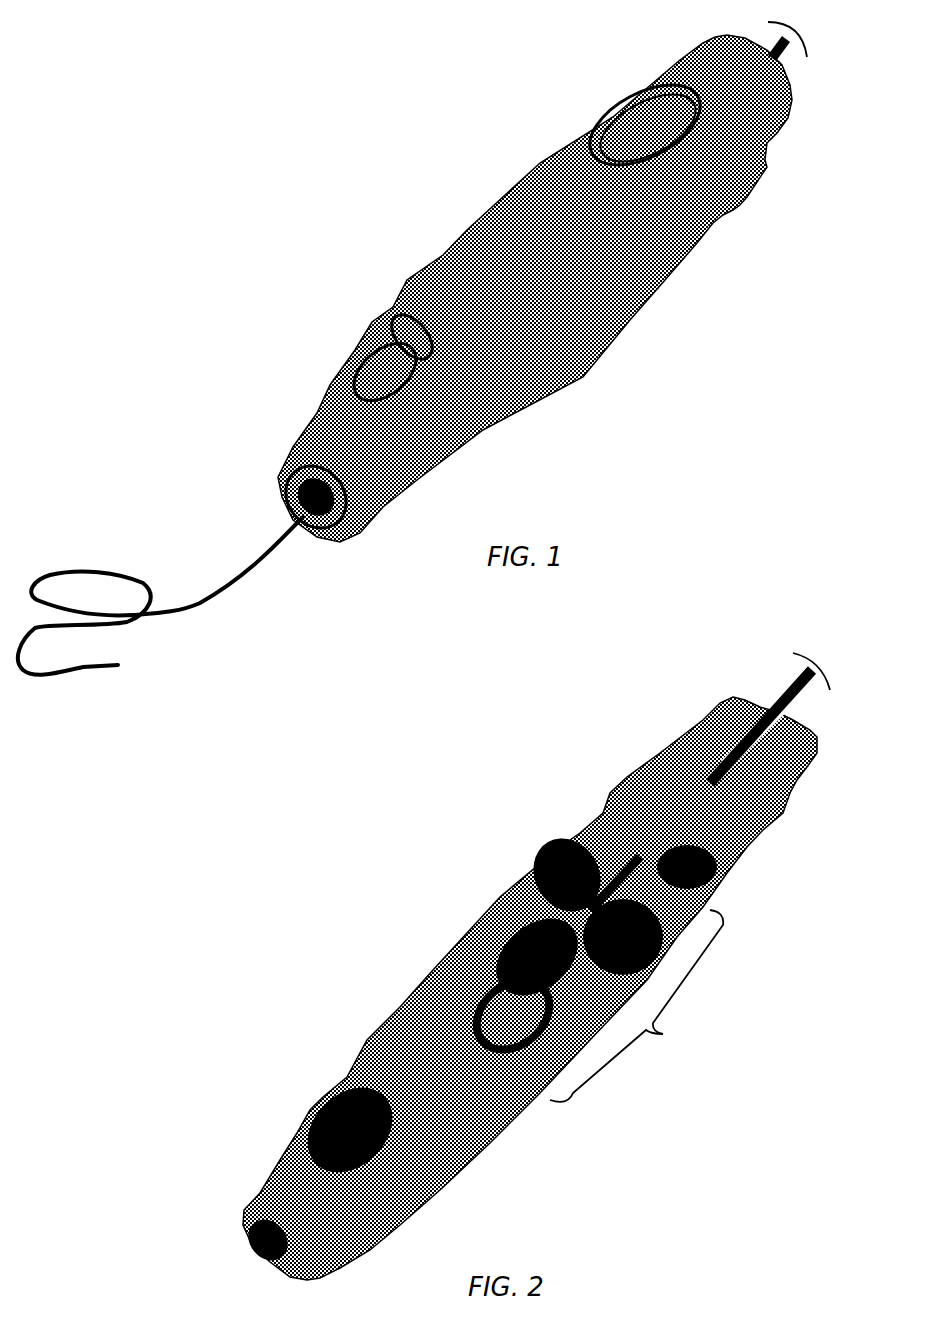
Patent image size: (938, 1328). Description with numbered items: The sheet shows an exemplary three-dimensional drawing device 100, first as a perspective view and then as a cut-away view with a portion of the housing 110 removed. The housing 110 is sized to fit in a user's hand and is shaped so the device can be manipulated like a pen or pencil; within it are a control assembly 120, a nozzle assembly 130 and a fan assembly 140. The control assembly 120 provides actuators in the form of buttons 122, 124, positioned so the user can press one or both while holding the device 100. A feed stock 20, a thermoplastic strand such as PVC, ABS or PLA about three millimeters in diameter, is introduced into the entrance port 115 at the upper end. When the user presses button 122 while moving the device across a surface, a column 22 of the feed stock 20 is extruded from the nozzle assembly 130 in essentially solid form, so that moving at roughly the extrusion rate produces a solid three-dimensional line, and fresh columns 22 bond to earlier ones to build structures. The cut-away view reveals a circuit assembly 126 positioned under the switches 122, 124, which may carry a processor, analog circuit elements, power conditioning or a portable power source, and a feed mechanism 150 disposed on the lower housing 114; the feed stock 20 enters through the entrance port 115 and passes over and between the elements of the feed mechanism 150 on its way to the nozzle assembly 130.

In FIG. 1, the 3D drawing device 100 is at (328, 80).
In FIG. 1, the housing 110 is at (467, 230).
In FIG. 1, the control assembly 120 is at (320, 340).
In FIG. 1, the button 122 is at (350, 380).
In FIG. 1, the button 124 is at (383, 333).
In FIG. 1, the nozzle assembly 130 is at (293, 492).
In FIG. 1, the fan assembly 140 is at (633, 113).
In FIG. 1, the feed stock 20 is at (783, 57).
In FIG. 2, the feed stock 20 is at (807, 697).
In FIG. 1, the column 22 is at (237, 580).
In FIG. 2, the entrance port 115 is at (767, 702).
In FIG. 2, the lower housing 114 is at (497, 902).
In FIG. 2, the feed mechanism 150 is at (636, 1006).
In FIG. 2, the circuit assembly 126 is at (312, 1125).